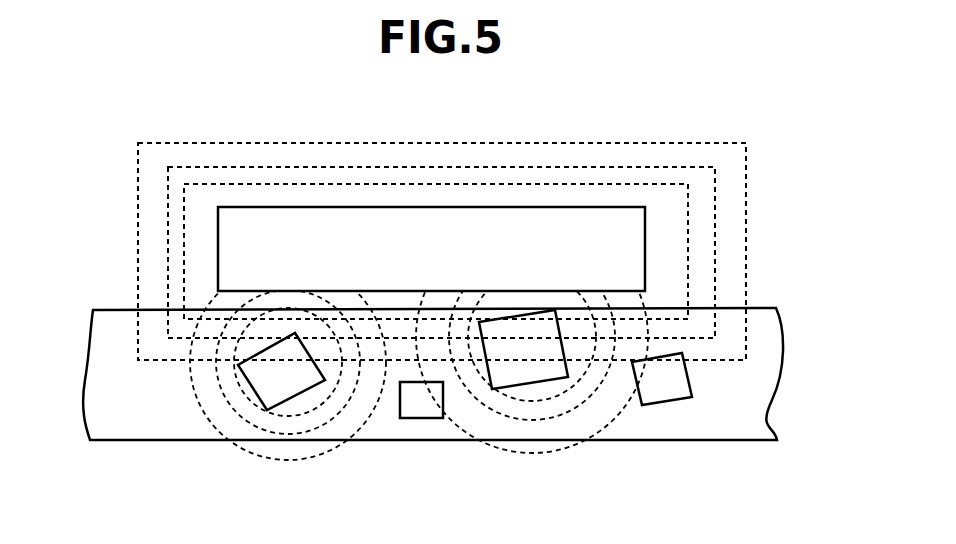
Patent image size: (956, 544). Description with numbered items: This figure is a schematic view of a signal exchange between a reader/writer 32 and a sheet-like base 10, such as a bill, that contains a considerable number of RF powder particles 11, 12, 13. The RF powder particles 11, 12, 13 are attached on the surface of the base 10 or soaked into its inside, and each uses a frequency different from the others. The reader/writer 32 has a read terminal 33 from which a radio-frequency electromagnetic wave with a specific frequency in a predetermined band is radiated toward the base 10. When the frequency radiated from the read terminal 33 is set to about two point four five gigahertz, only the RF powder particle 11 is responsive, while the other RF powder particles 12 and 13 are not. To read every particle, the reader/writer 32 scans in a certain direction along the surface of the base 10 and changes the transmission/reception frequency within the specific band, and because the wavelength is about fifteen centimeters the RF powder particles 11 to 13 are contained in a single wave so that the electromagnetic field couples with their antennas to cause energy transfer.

The base 10 is at (757, 399).
The RF powder particle 11 is at (280, 397).
The RF powder particle 12 is at (427, 418).
The RF powder particle 13 is at (673, 403).
The reader/writer 32 is at (500, 207).
The read terminal 33 is at (277, 293).